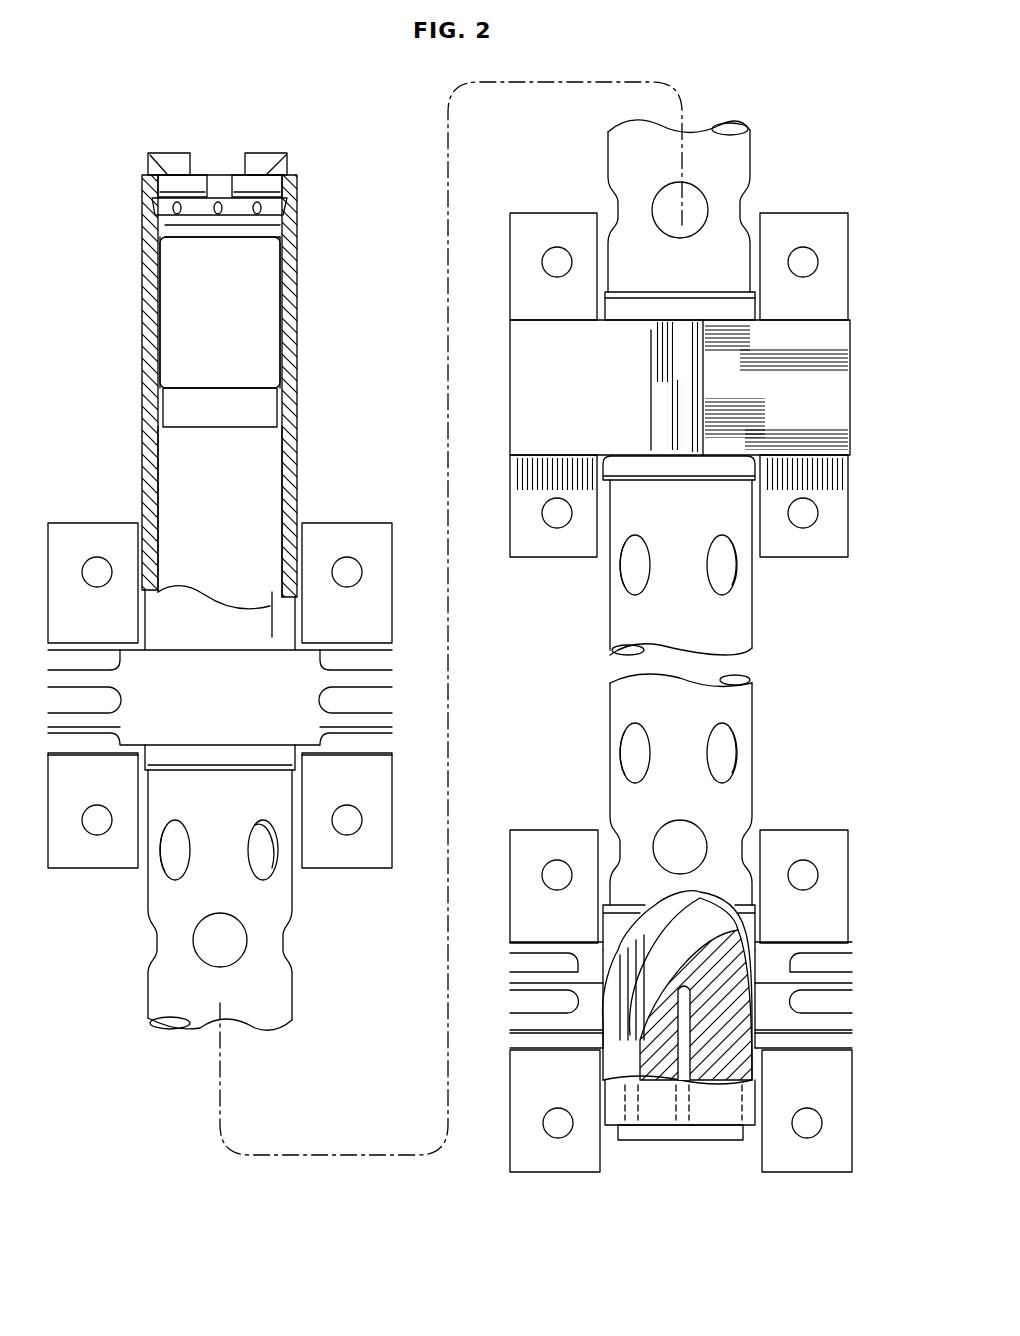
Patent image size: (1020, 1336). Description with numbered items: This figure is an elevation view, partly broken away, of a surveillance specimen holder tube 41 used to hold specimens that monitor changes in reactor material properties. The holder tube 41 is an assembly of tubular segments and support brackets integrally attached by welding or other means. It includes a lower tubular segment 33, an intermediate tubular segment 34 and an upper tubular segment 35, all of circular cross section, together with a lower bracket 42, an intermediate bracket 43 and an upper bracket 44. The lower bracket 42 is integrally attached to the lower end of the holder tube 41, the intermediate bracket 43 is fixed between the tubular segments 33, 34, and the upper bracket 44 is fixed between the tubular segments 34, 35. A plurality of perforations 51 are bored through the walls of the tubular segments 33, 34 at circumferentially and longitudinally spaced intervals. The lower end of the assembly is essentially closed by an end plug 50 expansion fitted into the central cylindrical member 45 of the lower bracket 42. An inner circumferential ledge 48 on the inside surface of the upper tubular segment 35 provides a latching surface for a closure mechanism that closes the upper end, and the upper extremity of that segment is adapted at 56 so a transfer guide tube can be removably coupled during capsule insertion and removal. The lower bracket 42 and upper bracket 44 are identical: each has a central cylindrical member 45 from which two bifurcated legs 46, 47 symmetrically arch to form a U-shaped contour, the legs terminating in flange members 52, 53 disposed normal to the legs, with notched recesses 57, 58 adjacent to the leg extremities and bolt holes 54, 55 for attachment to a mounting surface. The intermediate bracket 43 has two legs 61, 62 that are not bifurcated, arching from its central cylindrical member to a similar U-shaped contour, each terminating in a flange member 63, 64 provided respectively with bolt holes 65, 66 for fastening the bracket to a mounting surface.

The lower tubular segment 33 is at (742, 690).
The intermediate tubular segment 34 is at (258, 1010).
The upper tubular segment 35 is at (284, 302).
The holder tube 41 is at (142, 295).
The lower bracket 42 is at (757, 968).
The intermediate bracket 43 is at (645, 336).
The upper bracket 44 is at (190, 680).
The central cylindrical member 45 is at (622, 929).
The bifurcated leg 46 is at (594, 1035).
The bifurcated leg 47 is at (780, 1035).
The inner circumferential ledge 48 is at (278, 401).
The end plug 50 is at (717, 1065).
The perforations 51 is at (235, 925).
The flange member 52 is at (543, 936).
The flange member 53 is at (828, 1072).
The bolt holes 54 is at (563, 868).
The bolt holes 55 is at (812, 870).
The adapted upper extremity 56 is at (284, 187).
The notched recess 57 is at (843, 955).
The notched recess 58 is at (525, 958).
The leg 61 is at (512, 376).
The leg 62 is at (850, 420).
The flange member 63 is at (536, 309).
The flange member 64 is at (826, 311).
The bolt hole 65 is at (548, 521).
The bolt hole 66 is at (812, 519).